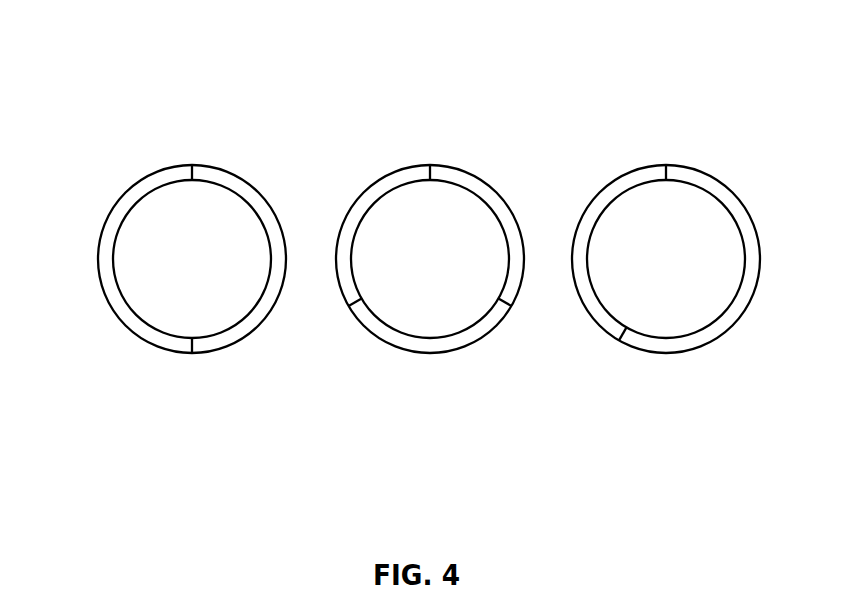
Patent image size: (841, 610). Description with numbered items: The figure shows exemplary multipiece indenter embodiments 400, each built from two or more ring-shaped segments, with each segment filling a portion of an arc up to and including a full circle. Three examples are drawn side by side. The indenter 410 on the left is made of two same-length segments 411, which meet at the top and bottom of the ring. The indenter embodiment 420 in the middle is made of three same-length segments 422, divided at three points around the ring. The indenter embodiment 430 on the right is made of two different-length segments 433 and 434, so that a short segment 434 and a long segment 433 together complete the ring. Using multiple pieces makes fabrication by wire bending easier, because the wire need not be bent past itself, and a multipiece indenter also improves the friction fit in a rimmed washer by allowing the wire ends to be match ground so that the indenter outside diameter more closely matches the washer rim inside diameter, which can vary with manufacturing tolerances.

The indenter embodiments 400 is at (122, 461).
The indenter 410 is at (190, 134).
The same-length segments 411 is at (145, 353).
The indenter embodiment 420 is at (430, 134).
The same-length segments 422 is at (347, 186).
The indenter embodiment 430 is at (665, 134).
The segment 433 is at (734, 343).
The segment 434 is at (596, 181).